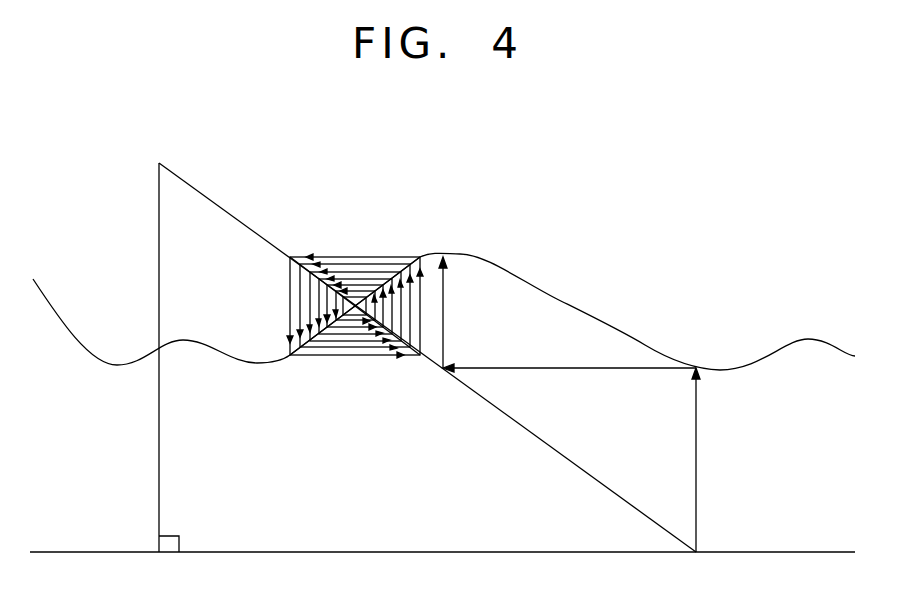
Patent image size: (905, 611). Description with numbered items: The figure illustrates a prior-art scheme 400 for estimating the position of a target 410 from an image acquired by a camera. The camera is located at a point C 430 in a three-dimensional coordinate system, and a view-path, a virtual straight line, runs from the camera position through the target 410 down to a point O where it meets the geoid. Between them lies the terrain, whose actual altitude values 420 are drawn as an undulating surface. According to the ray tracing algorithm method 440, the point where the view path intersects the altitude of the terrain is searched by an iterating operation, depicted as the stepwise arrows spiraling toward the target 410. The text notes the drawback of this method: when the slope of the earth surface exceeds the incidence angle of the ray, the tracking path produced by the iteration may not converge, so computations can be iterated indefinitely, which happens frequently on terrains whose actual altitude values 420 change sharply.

The scene / image capturing environment 400 is at (92, 121).
The target 410 is at (357, 304).
The actual altitude values 420 is at (578, 307).
The camera position C 430 is at (158, 163).
The ray tracing algorithm method 440 is at (387, 257).